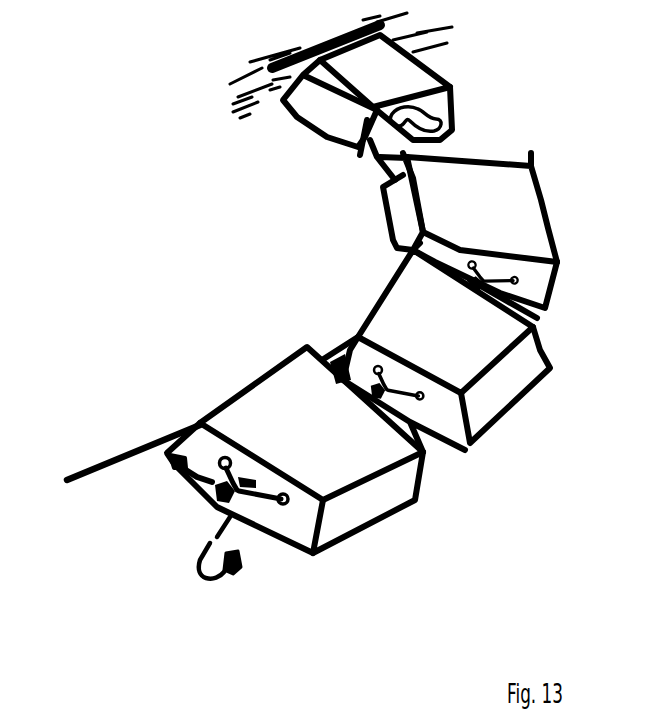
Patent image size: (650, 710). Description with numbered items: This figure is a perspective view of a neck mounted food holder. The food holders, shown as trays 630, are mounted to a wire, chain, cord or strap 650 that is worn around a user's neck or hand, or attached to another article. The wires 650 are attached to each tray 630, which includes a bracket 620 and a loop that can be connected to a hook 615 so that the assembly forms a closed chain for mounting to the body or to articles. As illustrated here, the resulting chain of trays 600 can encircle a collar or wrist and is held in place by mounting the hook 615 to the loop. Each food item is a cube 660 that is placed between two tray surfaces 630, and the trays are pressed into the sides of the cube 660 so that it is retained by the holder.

The chain of trays 600 is at (370, 533).
The hook 615 is at (233, 580).
The bracket 620 is at (210, 480).
The tray 630 is at (200, 423).
The wire 650 is at (100, 458).
The cube 660 is at (270, 372).